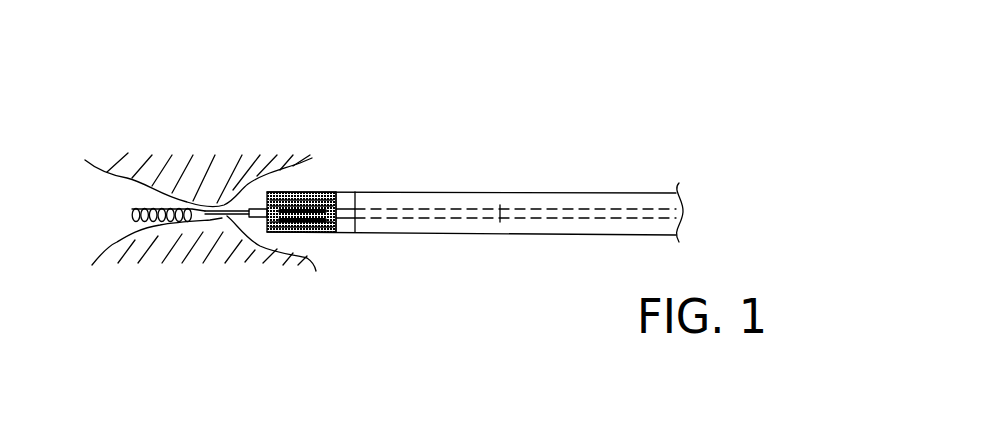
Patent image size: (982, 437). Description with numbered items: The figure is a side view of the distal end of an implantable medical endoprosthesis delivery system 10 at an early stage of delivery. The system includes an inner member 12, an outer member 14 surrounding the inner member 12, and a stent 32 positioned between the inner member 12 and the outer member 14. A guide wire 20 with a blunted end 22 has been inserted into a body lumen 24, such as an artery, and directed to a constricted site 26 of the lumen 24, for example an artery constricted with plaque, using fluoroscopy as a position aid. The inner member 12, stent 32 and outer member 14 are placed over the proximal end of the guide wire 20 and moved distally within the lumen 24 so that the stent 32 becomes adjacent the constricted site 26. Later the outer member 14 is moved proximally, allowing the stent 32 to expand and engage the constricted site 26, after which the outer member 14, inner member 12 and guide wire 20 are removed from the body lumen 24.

The implantable medical endoprosthesis delivery system 10 is at (632, 59).
The inner member 12 is at (500, 236).
The outer member 14 is at (541, 192).
The guide wire 20 is at (232, 218).
The blunted end 22 is at (132, 214).
The body lumen 24 is at (94, 232).
The constricted site 26 is at (204, 180).
The stent 32 is at (318, 223).